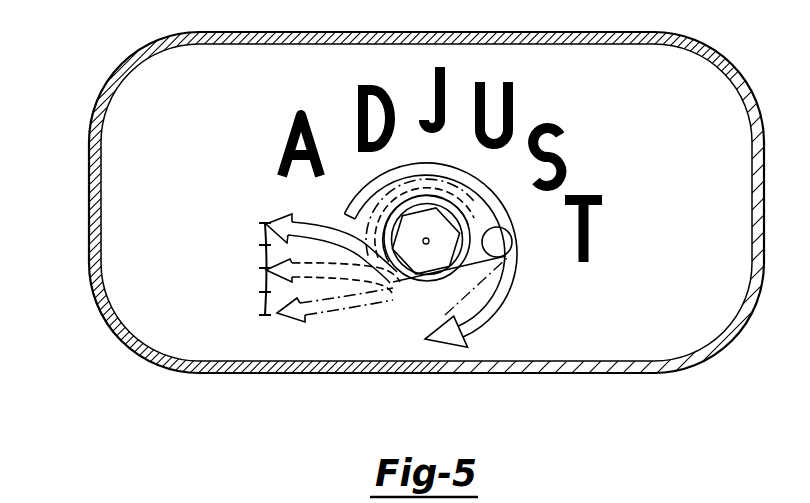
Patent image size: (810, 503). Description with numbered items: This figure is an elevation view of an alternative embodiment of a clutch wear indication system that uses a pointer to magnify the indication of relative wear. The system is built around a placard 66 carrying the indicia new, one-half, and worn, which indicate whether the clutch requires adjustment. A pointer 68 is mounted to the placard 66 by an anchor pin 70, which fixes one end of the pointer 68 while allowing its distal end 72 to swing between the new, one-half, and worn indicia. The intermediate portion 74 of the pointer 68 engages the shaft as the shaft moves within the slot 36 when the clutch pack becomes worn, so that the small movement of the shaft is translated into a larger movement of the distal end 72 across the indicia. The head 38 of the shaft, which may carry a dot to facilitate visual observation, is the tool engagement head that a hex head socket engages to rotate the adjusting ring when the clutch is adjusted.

The placard 66 is at (117, 122).
The pointer 68 is at (328, 232).
The anchor pin 70 is at (502, 243).
The distal end 72 is at (283, 220).
The intermediate portion 74 is at (412, 283).
The slot 36 is at (421, 198).
The head 38 is at (445, 237).